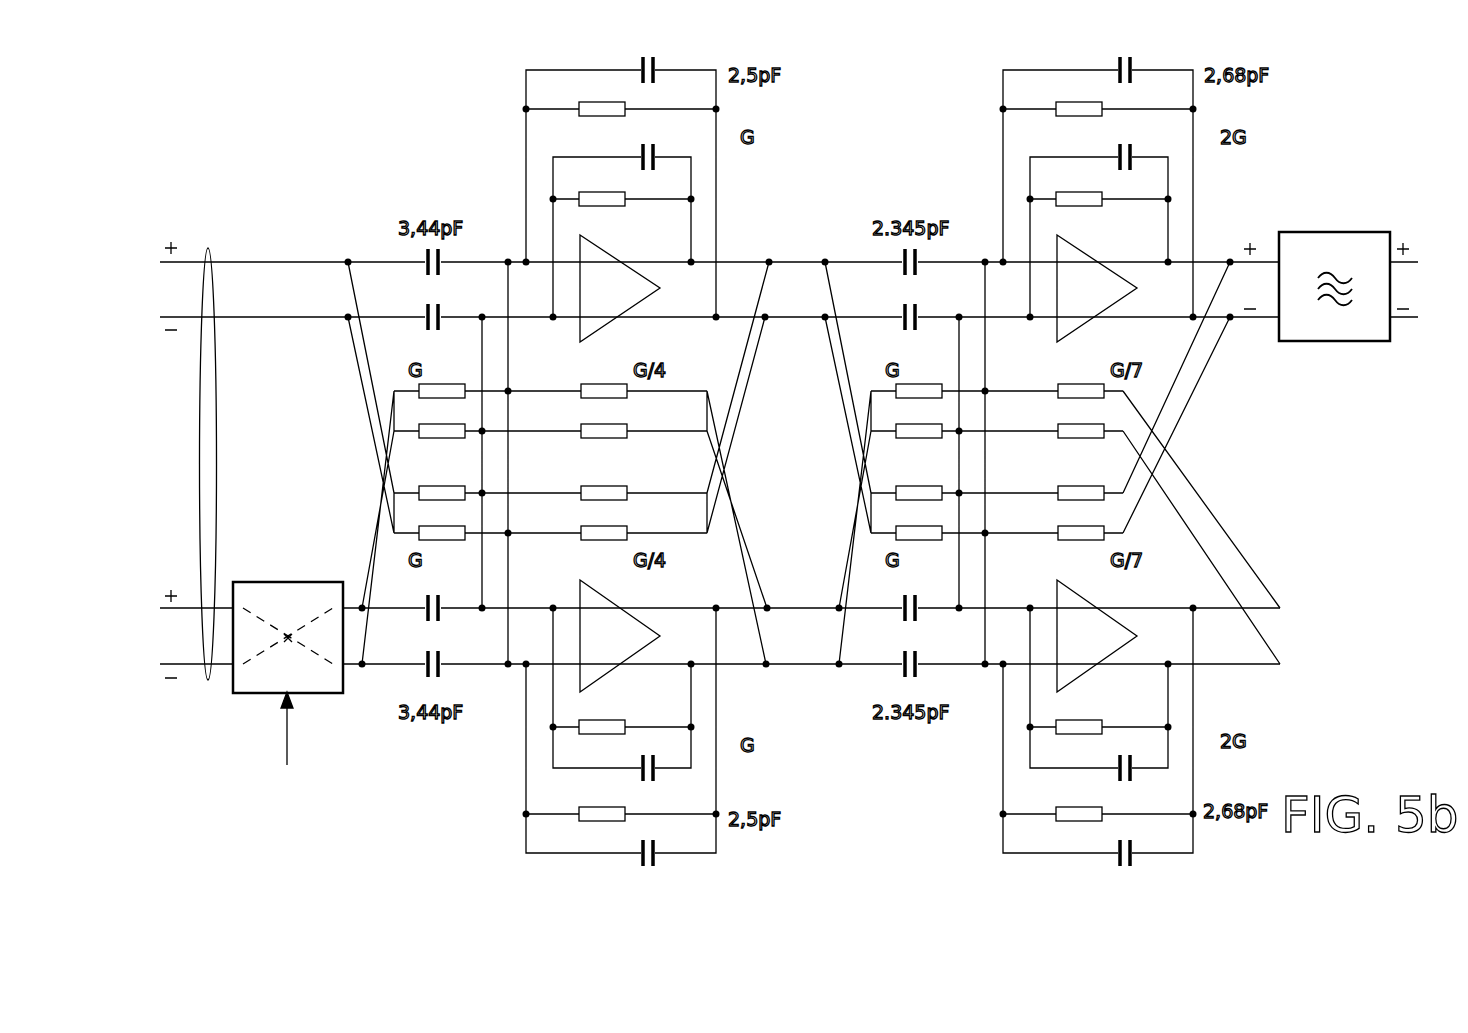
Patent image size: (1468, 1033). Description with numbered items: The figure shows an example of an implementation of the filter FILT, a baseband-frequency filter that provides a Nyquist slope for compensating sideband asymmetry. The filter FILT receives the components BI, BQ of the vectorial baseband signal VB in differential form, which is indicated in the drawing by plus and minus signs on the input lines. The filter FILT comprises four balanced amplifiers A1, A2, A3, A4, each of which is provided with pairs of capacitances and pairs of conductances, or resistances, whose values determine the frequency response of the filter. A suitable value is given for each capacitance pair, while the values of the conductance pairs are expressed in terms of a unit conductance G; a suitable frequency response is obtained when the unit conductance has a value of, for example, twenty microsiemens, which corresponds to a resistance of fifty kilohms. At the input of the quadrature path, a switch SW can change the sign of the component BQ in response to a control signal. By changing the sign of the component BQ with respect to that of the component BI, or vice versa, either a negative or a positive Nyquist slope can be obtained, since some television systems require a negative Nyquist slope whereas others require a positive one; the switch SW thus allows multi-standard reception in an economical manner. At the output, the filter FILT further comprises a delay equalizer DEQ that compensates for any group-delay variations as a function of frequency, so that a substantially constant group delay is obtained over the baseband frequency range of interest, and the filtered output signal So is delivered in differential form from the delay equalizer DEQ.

The filter FILT is at (324, 142).
The vectorial baseband signal VB is at (208, 247).
The component BI is at (249, 286).
The component BQ is at (256, 634).
The switch SW is at (272, 582).
The balanced amplifier A1 is at (620, 288).
The balanced amplifier A2 is at (620, 636).
The balanced amplifier A3 is at (1097, 288).
The balanced amplifier A4 is at (1097, 636).
The delay equalizer DEQ is at (1325, 232).
The output signal So is at (1418, 280).